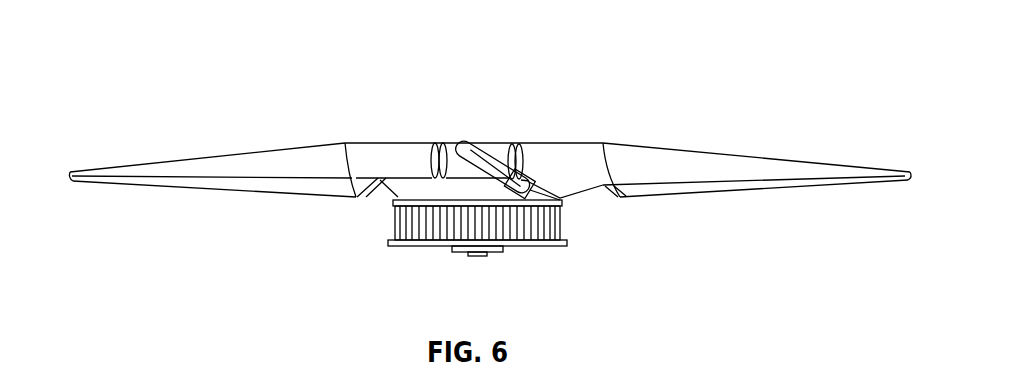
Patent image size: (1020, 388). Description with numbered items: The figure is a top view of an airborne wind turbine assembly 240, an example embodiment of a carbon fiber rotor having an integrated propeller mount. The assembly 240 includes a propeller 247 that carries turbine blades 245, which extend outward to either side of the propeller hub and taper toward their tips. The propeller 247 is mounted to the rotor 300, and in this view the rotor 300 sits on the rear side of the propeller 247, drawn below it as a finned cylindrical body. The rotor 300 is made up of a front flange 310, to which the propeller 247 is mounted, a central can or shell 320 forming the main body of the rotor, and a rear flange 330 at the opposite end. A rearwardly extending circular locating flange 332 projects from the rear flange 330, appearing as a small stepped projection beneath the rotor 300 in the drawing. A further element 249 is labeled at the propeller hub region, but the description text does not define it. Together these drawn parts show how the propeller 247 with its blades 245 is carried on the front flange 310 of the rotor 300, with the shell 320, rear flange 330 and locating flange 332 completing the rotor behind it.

The airborne wind turbine assembly 240 is at (684, 76).
The turbine blades 245 is at (227, 165).
The propeller 247 is at (530, 160).
The hub ring 249 is at (447, 192).
The rotor 300 is at (603, 246).
The front flange 310 is at (425, 182).
The central can or shell 320 is at (433, 232).
The rear flange 330 is at (556, 248).
The circular locating flange 332 is at (500, 250).